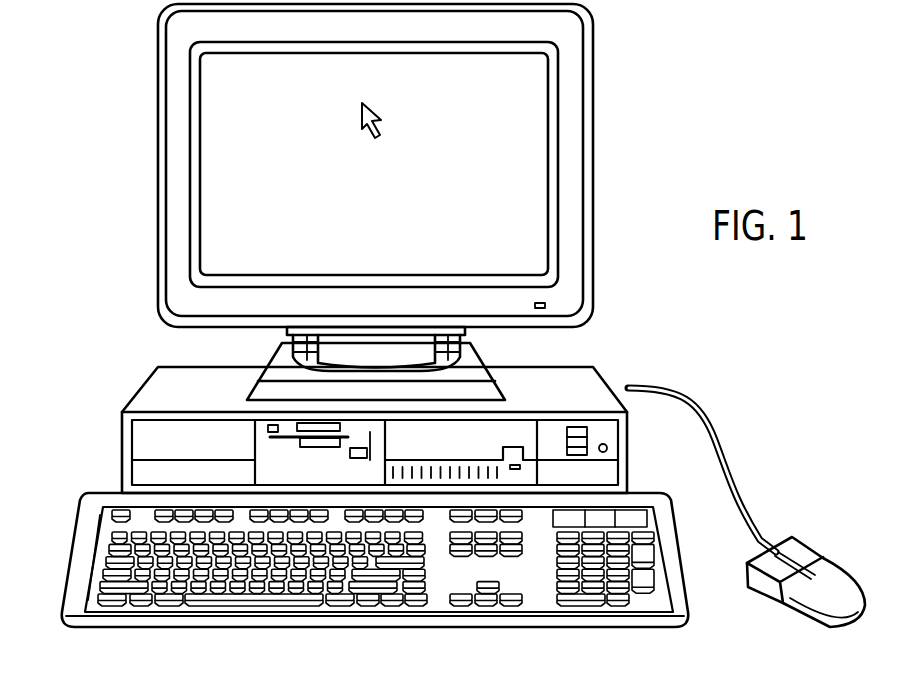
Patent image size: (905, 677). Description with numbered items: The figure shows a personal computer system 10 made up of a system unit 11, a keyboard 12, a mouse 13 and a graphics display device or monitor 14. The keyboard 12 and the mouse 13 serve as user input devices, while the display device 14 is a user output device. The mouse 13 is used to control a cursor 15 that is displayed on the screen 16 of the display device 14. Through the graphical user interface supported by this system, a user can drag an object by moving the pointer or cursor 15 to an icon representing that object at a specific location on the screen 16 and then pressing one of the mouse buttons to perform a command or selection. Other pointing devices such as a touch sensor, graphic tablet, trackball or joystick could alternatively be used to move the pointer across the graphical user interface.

The personal computer system 10 is at (82, 232).
The system unit 11 is at (140, 389).
The keyboard 12 is at (80, 506).
The mouse 13 is at (810, 537).
The graphics display device 14 is at (593, 152).
The cursor 15 is at (380, 110).
The screen 16 is at (322, 198).